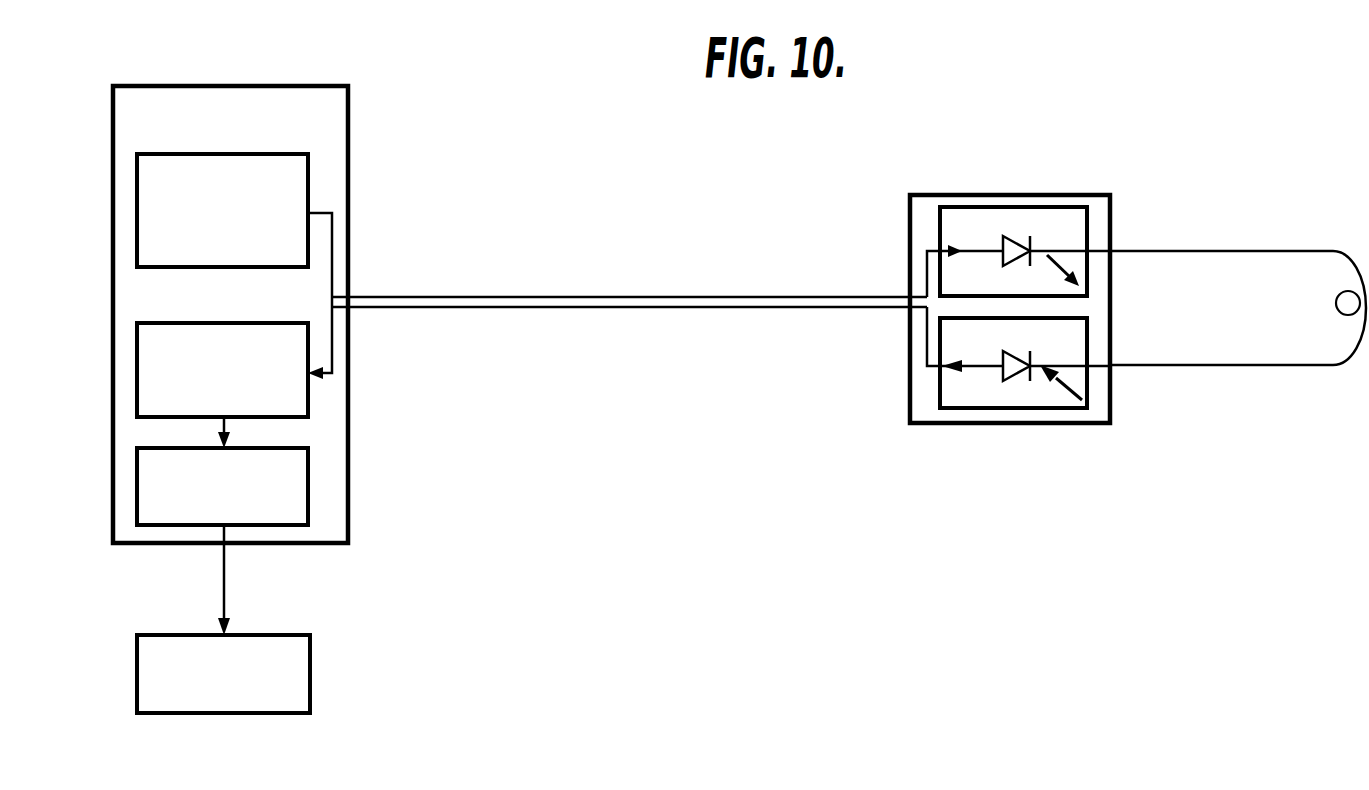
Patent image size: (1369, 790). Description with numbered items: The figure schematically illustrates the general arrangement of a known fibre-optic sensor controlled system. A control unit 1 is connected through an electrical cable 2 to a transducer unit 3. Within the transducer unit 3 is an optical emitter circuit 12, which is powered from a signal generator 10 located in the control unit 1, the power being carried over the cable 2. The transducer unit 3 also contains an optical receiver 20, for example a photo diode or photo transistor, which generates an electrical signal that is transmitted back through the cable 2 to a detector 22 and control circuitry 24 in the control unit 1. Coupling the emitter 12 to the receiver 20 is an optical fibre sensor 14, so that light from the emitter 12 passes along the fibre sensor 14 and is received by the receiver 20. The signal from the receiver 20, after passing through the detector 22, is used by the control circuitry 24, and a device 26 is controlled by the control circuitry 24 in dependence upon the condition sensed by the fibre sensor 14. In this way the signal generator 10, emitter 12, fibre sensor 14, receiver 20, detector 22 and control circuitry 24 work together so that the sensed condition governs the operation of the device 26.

The control unit 1 is at (349, 493).
The electrical cable 2 is at (572, 297).
The transducer unit 3 is at (953, 423).
The signal generator 10 is at (205, 225).
The optical emitter circuit 12 is at (1038, 217).
The optical fibre sensor 14 is at (1248, 365).
The optical receiver 20 is at (1007, 395).
The detector 22 is at (201, 386).
The control circuitry 24 is at (201, 502).
The device 26 is at (201, 689).